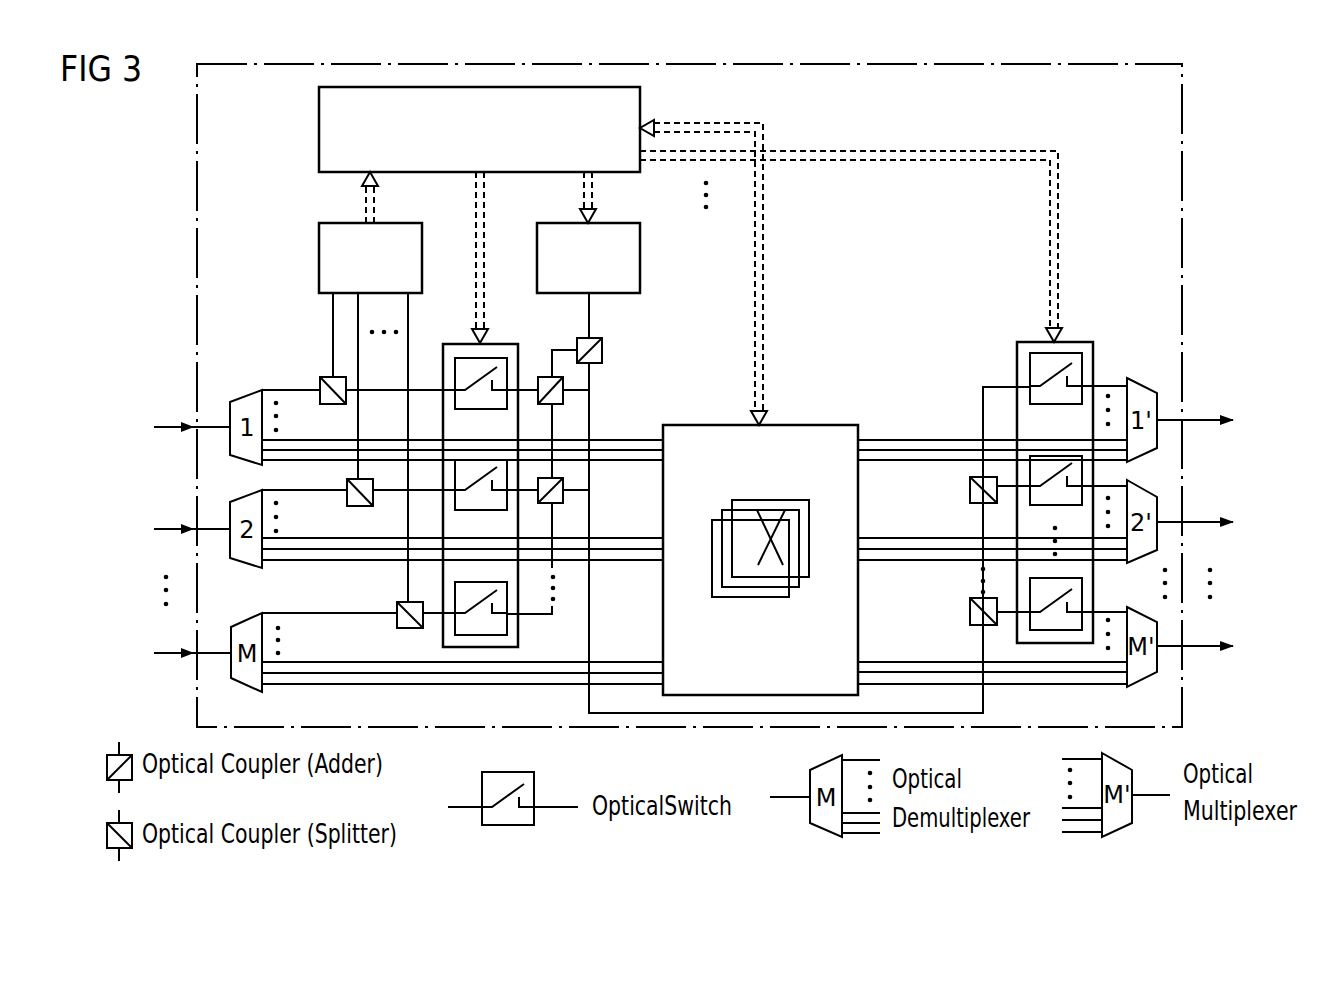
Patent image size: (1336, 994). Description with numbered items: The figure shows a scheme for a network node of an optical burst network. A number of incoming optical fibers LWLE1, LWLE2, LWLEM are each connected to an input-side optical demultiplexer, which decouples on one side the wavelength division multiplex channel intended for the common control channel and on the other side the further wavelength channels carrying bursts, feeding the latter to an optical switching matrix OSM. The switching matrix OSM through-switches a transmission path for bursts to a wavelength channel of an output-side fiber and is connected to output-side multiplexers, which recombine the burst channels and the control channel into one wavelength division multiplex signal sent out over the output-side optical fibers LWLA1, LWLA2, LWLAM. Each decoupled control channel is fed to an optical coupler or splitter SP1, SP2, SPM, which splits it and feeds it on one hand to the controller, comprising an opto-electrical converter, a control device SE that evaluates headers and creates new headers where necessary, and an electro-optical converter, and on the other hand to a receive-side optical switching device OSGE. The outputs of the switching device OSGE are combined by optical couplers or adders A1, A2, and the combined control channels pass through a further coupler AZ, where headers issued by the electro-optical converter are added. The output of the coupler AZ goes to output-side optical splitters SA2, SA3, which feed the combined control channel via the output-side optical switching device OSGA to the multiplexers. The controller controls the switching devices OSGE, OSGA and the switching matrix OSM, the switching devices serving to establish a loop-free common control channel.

The control device SE is at (479, 129).
The optical coupler or splitter SP1 is at (320, 382).
The optical coupler or splitter SP2 is at (347, 486).
The optical coupler or splitter SPM is at (397, 608).
The optical coupler or combiner/adder A1 is at (565, 386).
The optical coupler or combiner/adder A2 is at (565, 490).
The optical coupler or combiner/adder AZ is at (604, 348).
The receive-side optical switching device OSGE is at (443, 636).
The output-side optical switching device OSGA is at (1030, 342).
The optical switching matrix OSM is at (760, 560).
The output-side optical splitter SA2 is at (968, 490).
The output-side optical splitter SA3 is at (968, 612).
The incoming optical fiber LWLE1 is at (154, 427).
The incoming optical fiber LWLE2 is at (154, 529).
The incoming optical fiber LWLEM is at (152, 653).
The output-side optical fiber LWLA1 is at (1233, 420).
The output-side optical fiber LWLA2 is at (1235, 522).
The output-side optical fiber LWLAM is at (1241, 646).